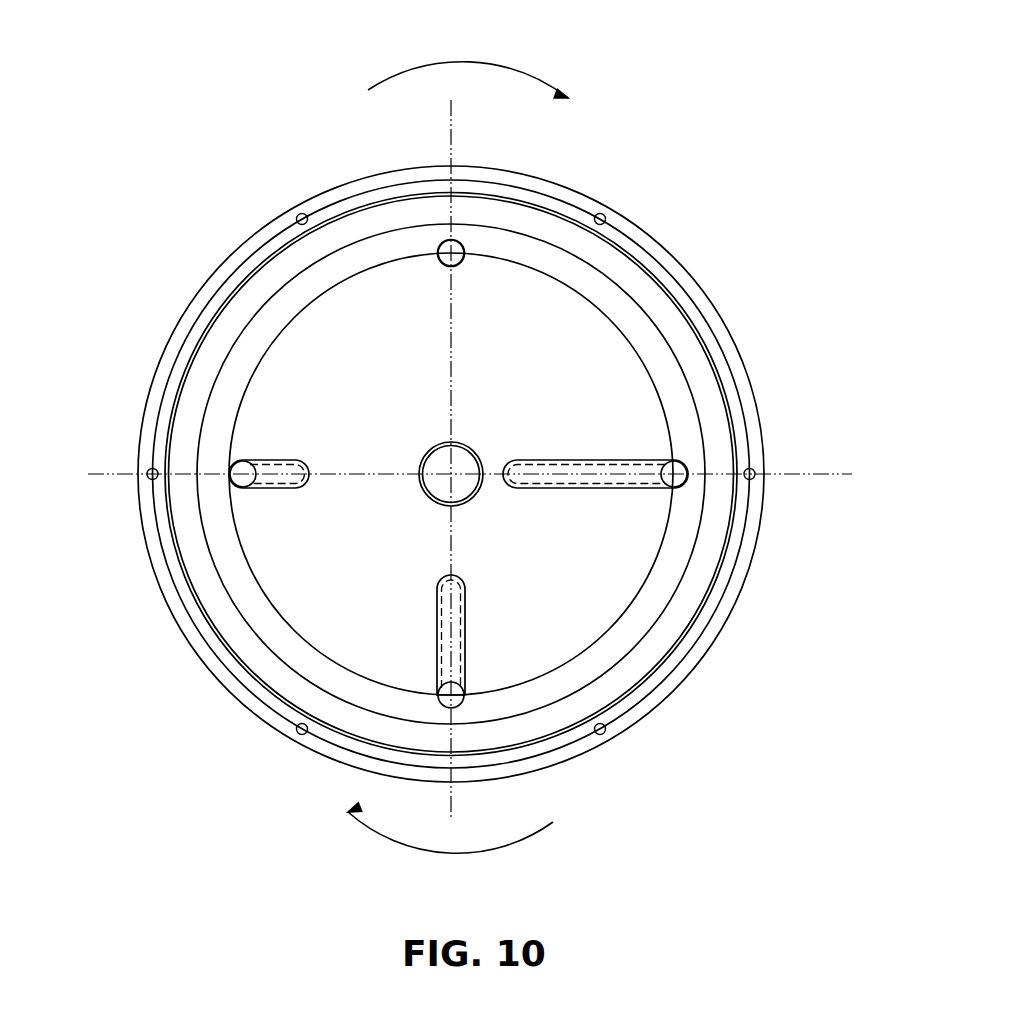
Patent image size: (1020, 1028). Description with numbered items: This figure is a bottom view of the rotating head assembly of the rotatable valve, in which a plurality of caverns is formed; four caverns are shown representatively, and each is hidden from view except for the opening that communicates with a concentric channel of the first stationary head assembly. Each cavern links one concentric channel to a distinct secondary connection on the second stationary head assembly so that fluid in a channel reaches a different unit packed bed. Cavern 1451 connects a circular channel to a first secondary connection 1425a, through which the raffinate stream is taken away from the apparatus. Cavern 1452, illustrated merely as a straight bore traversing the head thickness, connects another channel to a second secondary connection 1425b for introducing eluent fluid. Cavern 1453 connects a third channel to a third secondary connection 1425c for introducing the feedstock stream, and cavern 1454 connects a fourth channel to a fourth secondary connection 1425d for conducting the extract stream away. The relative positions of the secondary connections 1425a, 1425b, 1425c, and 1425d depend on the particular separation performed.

The first secondary connection 1425a is at (232, 483).
The second secondary connection 1425b is at (585, 139).
The third secondary connection 1425c is at (442, 704).
The fourth secondary connection 1425d is at (680, 487).
The cavern 1451 is at (267, 492).
The cavern 1452 is at (468, 243).
The cavern 1453 is at (446, 648).
The cavern 1454 is at (583, 469).